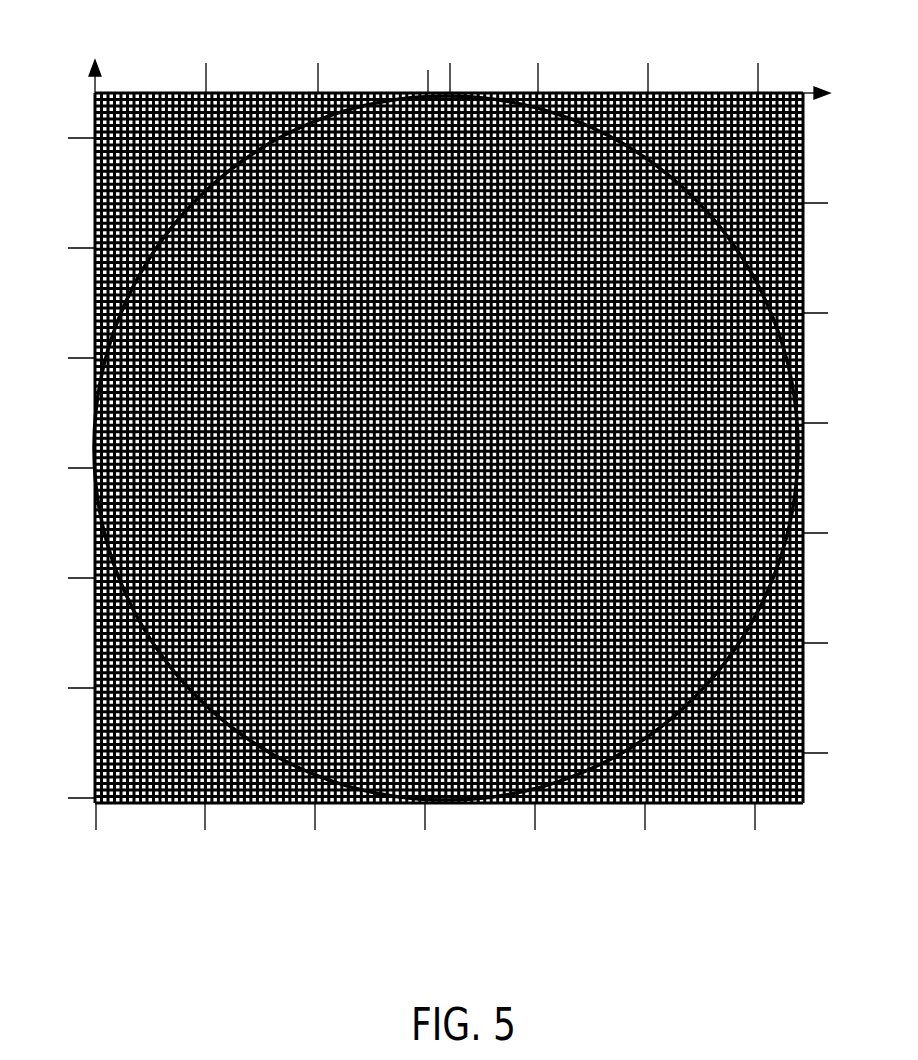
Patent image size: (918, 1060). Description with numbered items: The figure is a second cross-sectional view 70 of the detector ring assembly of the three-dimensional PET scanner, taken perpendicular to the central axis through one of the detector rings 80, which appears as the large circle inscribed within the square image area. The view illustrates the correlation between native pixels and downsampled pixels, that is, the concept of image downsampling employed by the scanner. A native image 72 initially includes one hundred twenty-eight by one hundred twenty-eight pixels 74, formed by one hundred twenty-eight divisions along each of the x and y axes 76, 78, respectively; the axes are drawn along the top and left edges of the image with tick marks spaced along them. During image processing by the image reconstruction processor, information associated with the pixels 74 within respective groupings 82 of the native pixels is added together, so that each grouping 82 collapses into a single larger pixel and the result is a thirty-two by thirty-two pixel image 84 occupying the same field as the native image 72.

The second cross-sectional view 70 is at (461, 479).
The native image 72 is at (492, 448).
The 32×32 pixel image 84 is at (796, 143).
The pixels 74 is at (200, 85).
The x axis 76 is at (783, 85).
The y axis 78 is at (86, 142).
The detector ring 80 is at (796, 410).
The groupings 82 is at (86, 250).